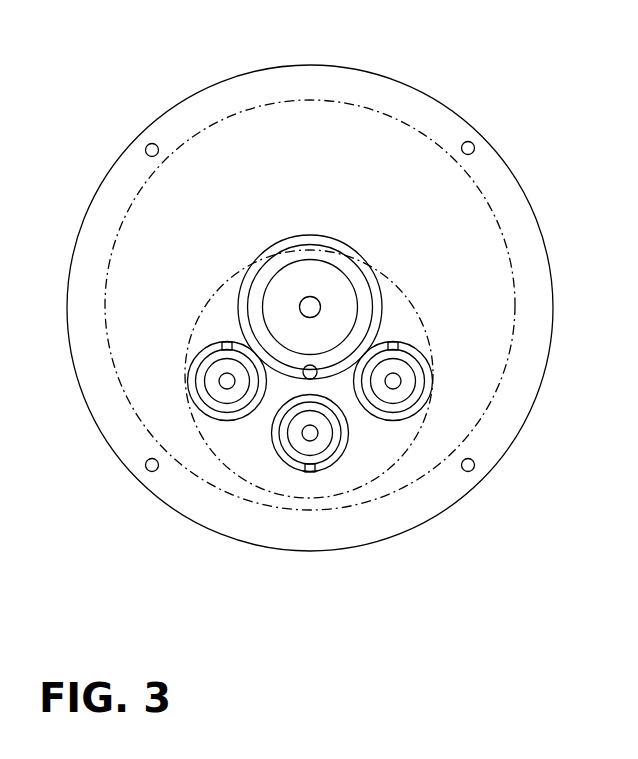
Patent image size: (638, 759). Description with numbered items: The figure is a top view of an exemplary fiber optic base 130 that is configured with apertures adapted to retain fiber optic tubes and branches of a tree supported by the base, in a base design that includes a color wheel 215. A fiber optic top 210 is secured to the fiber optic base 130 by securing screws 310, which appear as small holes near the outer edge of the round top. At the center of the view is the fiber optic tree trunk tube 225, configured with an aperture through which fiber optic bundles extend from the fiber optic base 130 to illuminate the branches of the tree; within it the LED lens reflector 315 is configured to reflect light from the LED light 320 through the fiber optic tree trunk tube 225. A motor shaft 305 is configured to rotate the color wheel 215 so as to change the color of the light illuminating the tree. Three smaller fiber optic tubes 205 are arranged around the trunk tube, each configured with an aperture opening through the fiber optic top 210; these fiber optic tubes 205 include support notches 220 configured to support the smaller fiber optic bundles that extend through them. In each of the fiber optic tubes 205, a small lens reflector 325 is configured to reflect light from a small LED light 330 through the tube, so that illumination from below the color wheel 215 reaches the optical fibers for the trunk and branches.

The fiber optic base 130 is at (36, 61).
The fiber optic top 210 is at (425, 92).
The color wheel 215 is at (155, 399).
The securing screw 310 is at (140, 153).
The fiber optic tree trunk tube 225 is at (280, 240).
The LED lens reflector 315 is at (265, 292).
The LED light 320 is at (311, 297).
The motor shaft 305 is at (305, 366).
The fiber optic tubes 205 is at (383, 341).
The small lens reflector 325 is at (430, 382).
The small LED light 330 is at (220, 380).
The support notches 220 is at (226, 342).